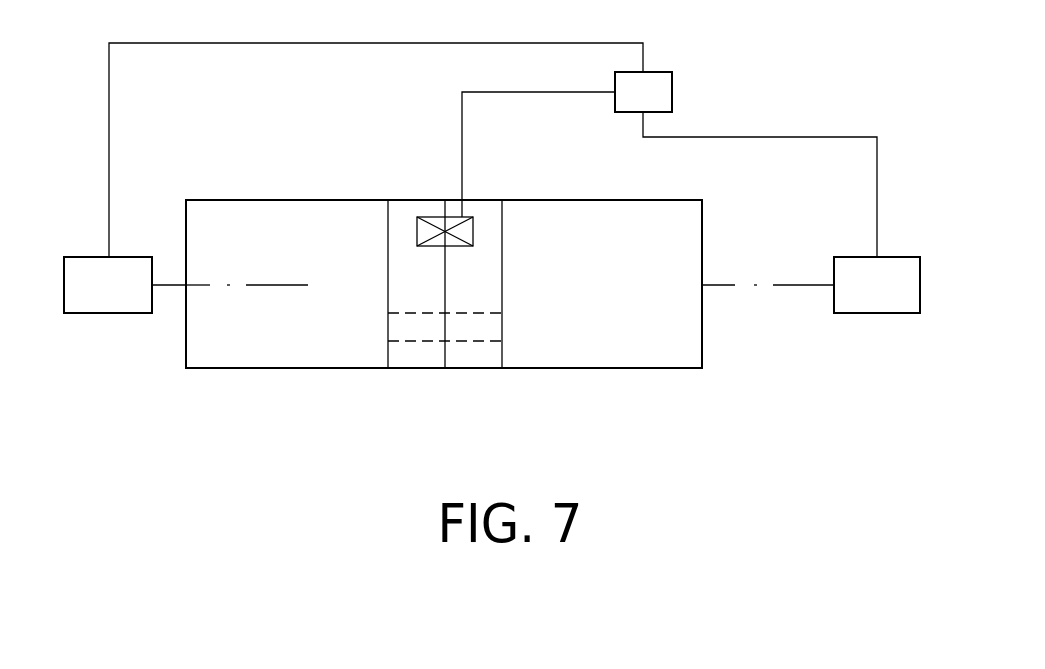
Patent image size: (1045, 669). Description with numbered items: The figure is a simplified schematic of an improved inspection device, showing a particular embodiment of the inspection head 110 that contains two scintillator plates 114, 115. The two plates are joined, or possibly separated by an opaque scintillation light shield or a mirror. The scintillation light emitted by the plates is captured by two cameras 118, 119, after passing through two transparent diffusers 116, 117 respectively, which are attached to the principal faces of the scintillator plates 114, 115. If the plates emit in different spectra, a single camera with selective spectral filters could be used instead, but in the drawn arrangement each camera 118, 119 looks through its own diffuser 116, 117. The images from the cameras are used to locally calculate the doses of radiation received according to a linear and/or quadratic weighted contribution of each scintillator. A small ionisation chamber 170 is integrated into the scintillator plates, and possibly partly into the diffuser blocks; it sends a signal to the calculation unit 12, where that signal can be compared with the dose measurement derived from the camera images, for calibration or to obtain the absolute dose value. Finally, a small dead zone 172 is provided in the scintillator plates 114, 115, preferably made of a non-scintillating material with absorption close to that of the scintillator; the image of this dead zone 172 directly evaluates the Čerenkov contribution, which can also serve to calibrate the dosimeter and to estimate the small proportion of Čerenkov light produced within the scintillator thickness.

The calculation unit 12 is at (672, 91).
The inspection head 110 is at (350, 160).
The scintillator plate 114 is at (420, 368).
The scintillator plate 115 is at (475, 368).
The transparent diffuser 116 is at (693, 237).
The transparent diffuser 117 is at (252, 212).
The camera 118 is at (868, 305).
The camera 119 is at (124, 306).
The ionisation chamber 170 is at (438, 222).
The dead zone 172 is at (493, 323).